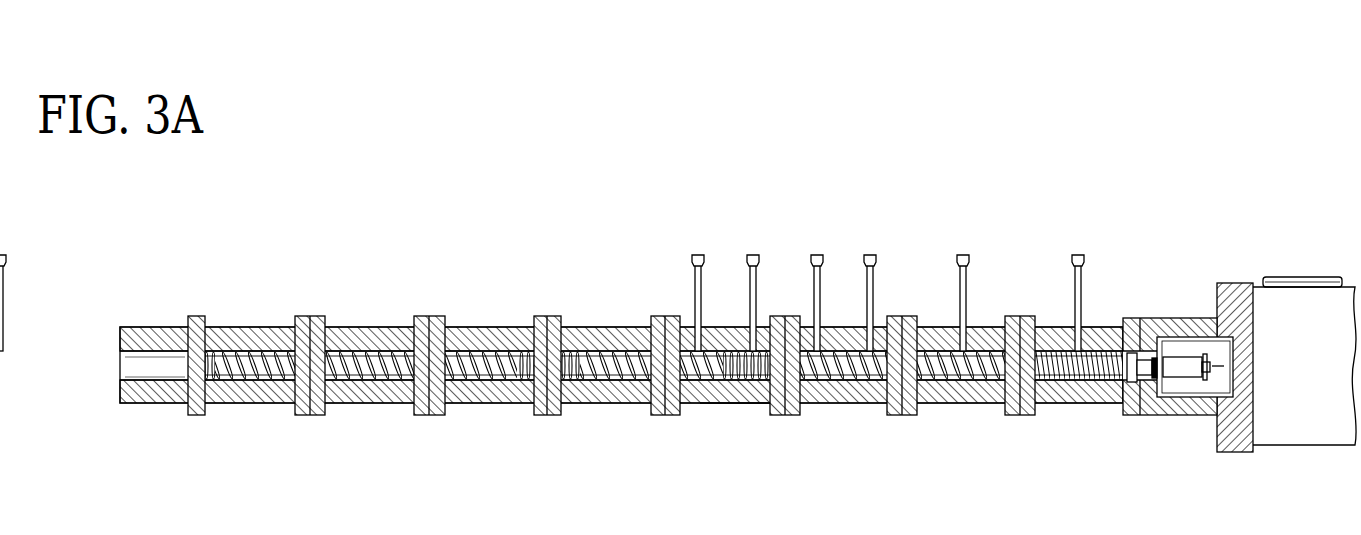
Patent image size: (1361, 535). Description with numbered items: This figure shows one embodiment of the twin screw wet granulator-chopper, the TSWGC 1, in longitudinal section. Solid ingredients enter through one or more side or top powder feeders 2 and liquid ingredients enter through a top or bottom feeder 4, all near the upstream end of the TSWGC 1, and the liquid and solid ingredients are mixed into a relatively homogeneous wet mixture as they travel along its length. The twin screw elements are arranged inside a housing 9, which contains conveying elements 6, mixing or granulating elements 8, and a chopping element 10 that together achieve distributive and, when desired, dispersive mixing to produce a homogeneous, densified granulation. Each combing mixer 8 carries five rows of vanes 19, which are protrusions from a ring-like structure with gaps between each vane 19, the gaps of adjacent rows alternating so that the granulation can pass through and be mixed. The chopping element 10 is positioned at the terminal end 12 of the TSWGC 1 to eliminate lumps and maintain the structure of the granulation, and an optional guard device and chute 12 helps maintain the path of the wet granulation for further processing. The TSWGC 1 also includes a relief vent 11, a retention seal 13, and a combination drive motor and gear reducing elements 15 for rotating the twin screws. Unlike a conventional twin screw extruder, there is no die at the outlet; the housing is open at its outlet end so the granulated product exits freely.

The twin screw wet granulator-chopper (TSWGC) 1 is at (268, 303).
The powder feeder 2 is at (972, 350).
The liquid feeder 4 is at (702, 277).
The conveying elements 6 is at (257, 405).
The mixing (granulating) elements 8 is at (583, 405).
The housing 9 is at (470, 403).
The chopping element 10 is at (219, 382).
The relief vent 11 is at (1085, 285).
The terminal end 12 is at (143, 405).
The retention seal 13 is at (1185, 362).
The combination drive motor and gear reducing elements 15 is at (1310, 277).
The vanes 19 is at (735, 405).